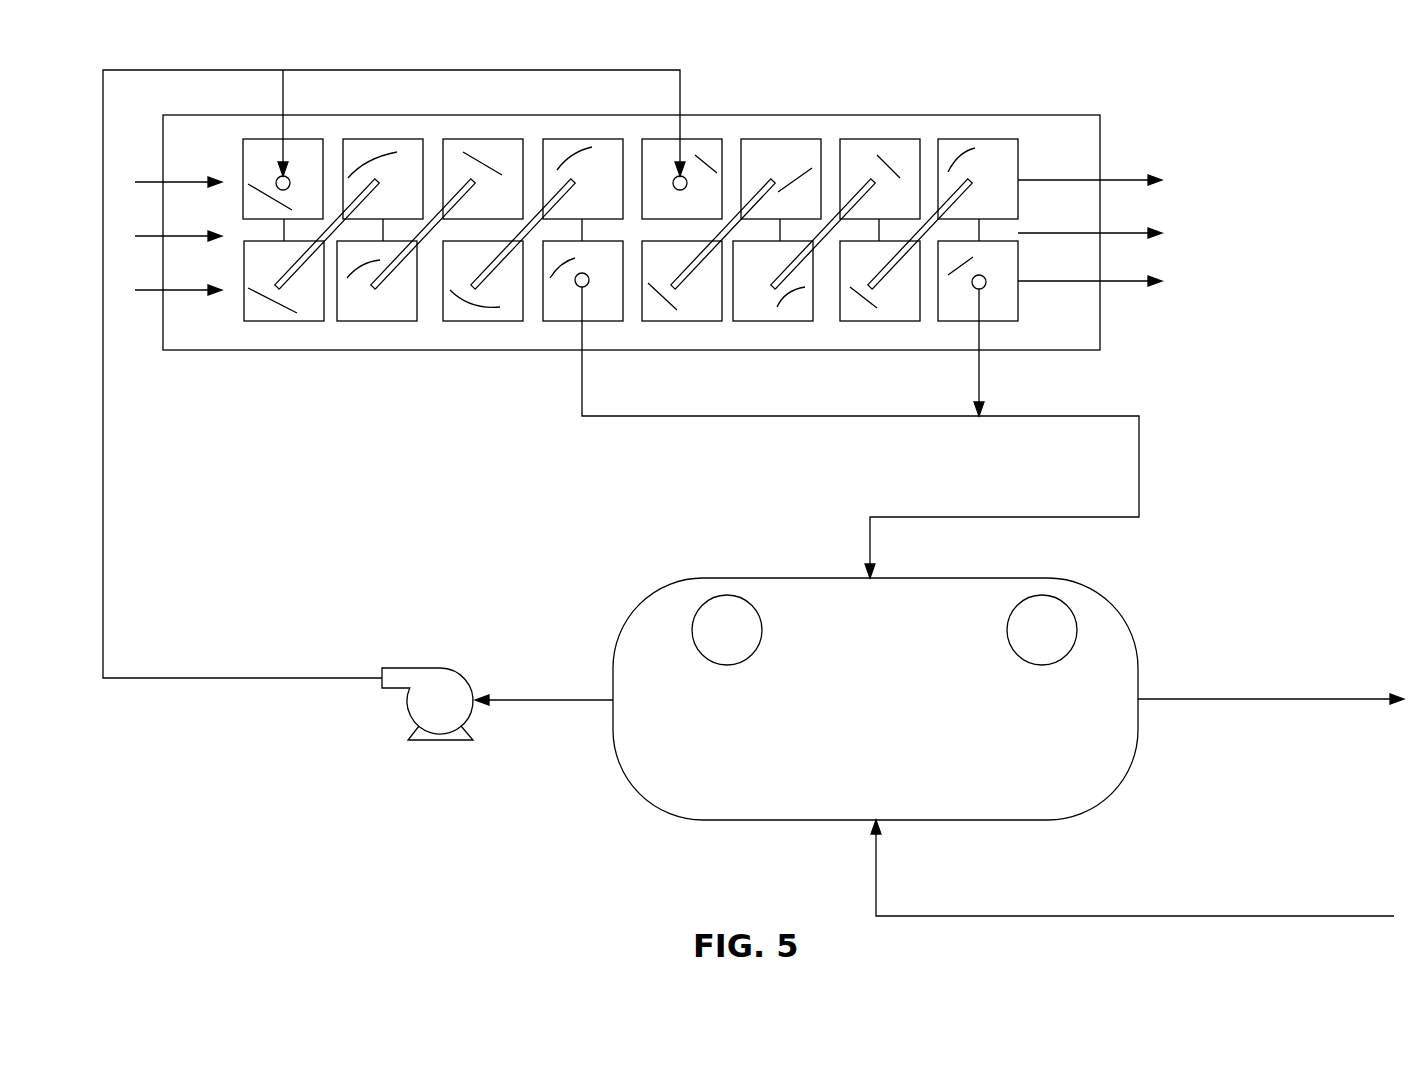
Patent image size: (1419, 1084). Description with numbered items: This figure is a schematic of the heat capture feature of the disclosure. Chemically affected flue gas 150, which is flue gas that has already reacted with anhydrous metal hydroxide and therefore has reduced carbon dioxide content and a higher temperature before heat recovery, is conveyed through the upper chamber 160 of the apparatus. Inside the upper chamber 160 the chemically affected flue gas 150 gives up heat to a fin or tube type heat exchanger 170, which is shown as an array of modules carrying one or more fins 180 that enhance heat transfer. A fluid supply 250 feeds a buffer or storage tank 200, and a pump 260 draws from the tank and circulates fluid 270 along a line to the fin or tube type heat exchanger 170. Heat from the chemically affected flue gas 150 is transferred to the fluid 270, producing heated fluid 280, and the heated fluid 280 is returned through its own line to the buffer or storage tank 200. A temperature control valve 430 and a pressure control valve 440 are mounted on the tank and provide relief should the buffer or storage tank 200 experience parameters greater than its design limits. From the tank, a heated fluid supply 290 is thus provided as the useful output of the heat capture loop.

The chemically affected flue gas 150 is at (150, 293).
The upper chamber 160 is at (880, 115).
The fin or tube type heat exchanger 170 is at (671, 180).
The fins 180 is at (795, 148).
The buffer or storage tank 200 is at (851, 717).
The fluid supply 250 is at (1268, 916).
The pump 260 is at (420, 742).
The fluid 270 is at (103, 530).
The heated fluid 280 is at (735, 416).
The heated fluid supply 290 is at (1290, 699).
The temperature control valve 430 is at (1062, 600).
The pressure control valve 440 is at (705, 600).